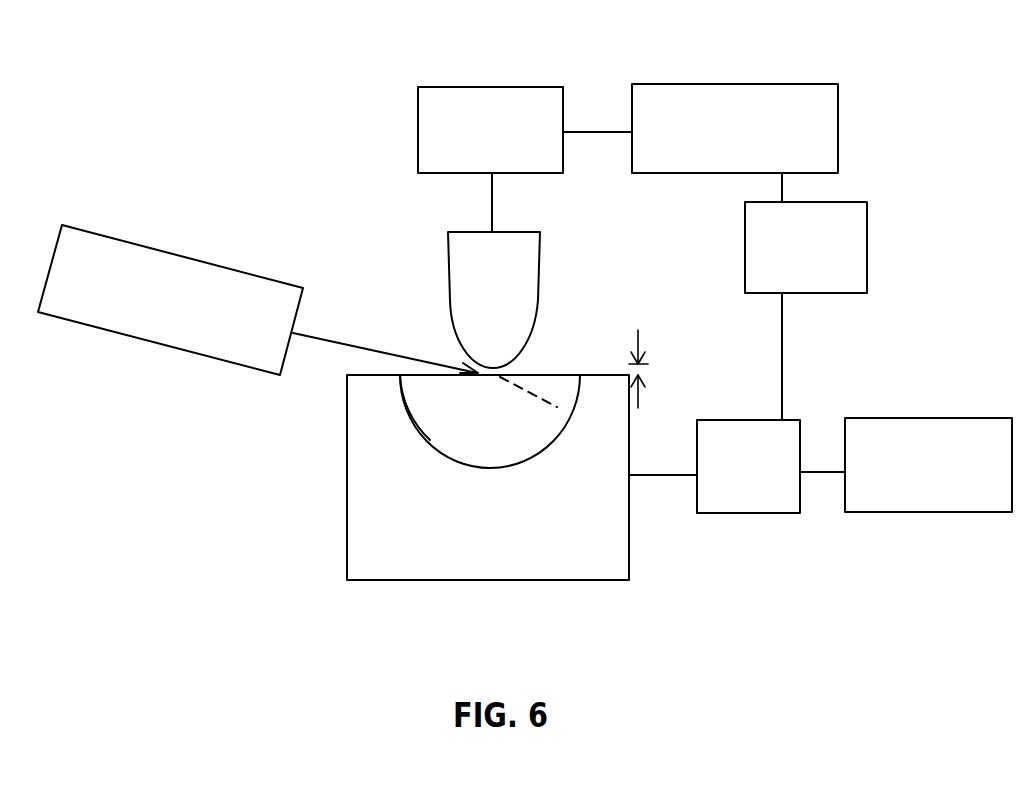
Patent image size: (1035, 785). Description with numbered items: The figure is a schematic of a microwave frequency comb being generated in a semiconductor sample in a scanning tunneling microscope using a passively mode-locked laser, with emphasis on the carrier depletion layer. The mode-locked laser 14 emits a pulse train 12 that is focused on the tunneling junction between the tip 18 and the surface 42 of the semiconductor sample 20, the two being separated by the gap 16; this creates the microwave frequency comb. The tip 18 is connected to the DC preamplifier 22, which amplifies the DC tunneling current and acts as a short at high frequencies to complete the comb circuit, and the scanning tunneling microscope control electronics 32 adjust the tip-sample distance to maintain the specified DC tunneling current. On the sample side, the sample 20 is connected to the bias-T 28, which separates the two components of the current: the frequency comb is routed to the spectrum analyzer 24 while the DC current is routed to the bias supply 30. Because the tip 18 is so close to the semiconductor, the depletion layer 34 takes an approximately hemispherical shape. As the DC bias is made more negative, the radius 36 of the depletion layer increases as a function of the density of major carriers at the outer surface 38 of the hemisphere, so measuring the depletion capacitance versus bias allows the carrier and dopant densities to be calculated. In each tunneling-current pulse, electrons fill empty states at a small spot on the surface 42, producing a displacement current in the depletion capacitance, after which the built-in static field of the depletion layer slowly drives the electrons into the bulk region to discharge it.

The pulse train 12 is at (315, 337).
The passively mode-locked laser 14 is at (115, 334).
The gap 16 is at (645, 375).
The tip 18 is at (545, 279).
The semiconductor sample 20 is at (343, 492).
The DC preamplifier 22 is at (479, 84).
The spectrum analyzer 24 is at (970, 411).
The bias-T 28 is at (728, 414).
The bias supply 30 is at (858, 266).
The scanning tunneling microscope control electronics 32 is at (717, 178).
The depletion layer 34 is at (490, 421).
The radius 36 is at (560, 408).
The outer surface 38 is at (417, 428).
The surface 42 is at (548, 373).